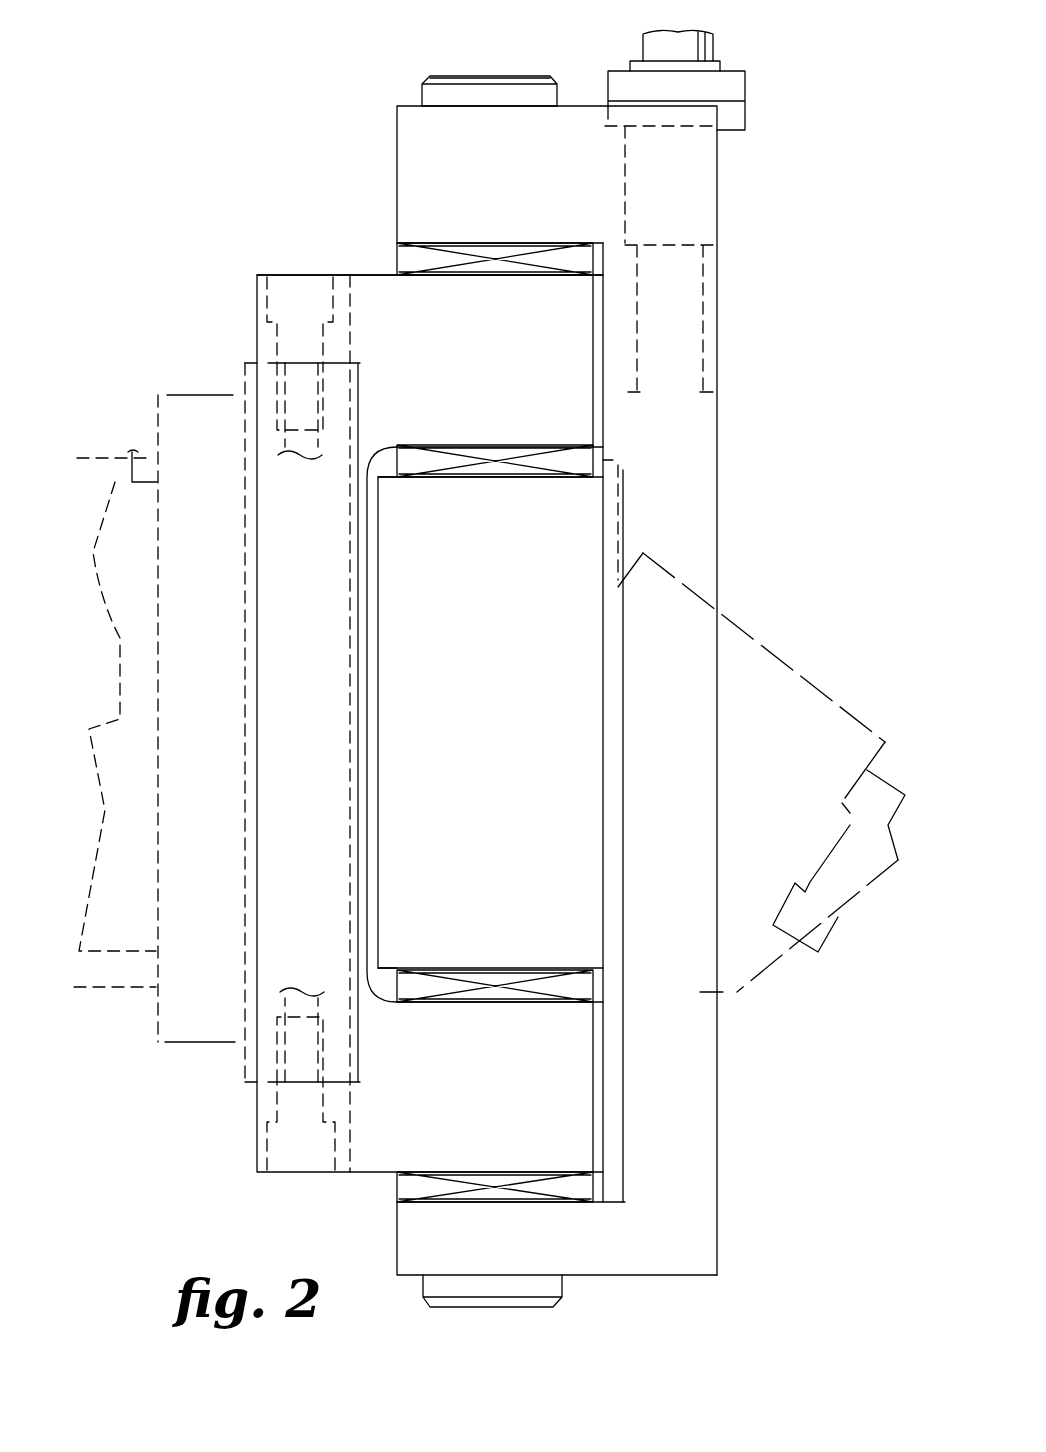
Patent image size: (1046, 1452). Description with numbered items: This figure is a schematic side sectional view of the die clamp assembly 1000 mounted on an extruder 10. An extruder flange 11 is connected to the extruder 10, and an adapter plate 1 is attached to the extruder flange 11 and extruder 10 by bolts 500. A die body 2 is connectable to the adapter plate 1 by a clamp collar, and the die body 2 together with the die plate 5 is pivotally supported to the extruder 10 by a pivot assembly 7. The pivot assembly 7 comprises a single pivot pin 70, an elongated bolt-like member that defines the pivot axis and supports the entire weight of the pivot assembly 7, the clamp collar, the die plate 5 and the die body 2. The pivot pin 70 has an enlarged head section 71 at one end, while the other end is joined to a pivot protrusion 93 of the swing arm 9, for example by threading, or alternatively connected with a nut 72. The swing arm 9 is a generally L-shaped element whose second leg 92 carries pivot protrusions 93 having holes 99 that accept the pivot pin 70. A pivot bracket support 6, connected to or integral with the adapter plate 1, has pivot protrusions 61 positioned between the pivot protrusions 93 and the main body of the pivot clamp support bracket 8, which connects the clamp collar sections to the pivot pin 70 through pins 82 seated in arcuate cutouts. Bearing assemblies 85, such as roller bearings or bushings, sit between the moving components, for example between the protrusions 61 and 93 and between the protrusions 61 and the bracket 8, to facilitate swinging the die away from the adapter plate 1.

The adapter plate 1 is at (246, 384).
The die body 2 is at (768, 946).
The die plate 5 is at (870, 855).
The pivot bracket support 6 is at (376, 306).
The pivot assembly 7 is at (458, 64).
The pivot clamp support bracket 8 is at (414, 836).
The swing arm 9 is at (427, 207).
The extruder 10 is at (103, 449).
The extruder flange 11 is at (203, 416).
The pivot protrusions 61 is at (488, 368).
The pivot pin 70 is at (479, 76).
The enlarged head section 71 is at (420, 93).
The nut 72 is at (548, 1285).
The pin 82 is at (483, 697).
The bearing assemblies 85 is at (582, 260).
The second leg 92 is at (695, 1125).
The pivot protrusions 93 is at (566, 125).
The holes 99 is at (712, 45).
The bolts 500 is at (282, 272).
The die clamp assembly 1000 is at (132, 452).